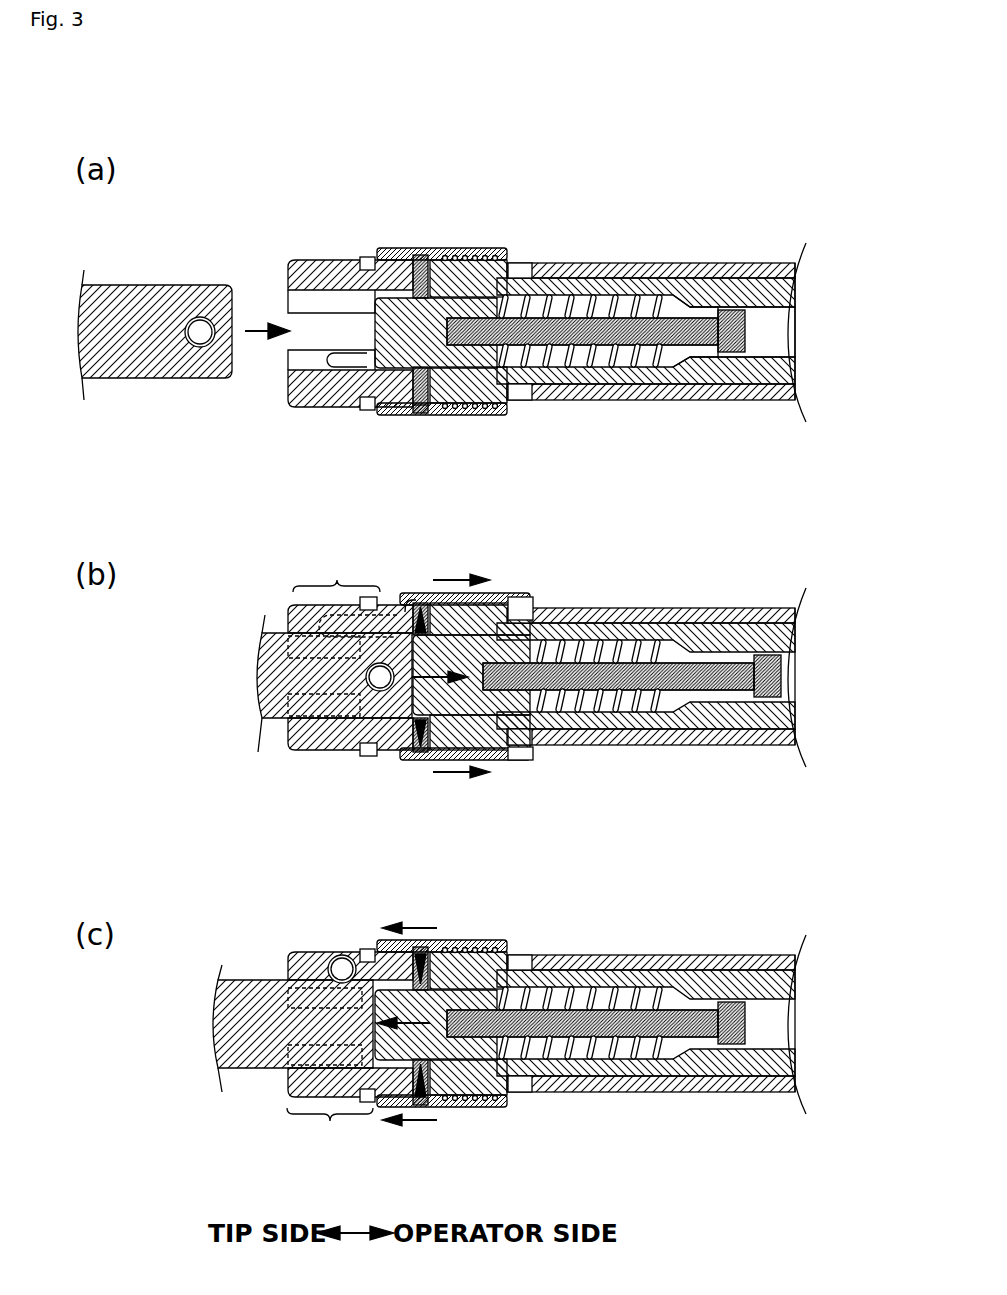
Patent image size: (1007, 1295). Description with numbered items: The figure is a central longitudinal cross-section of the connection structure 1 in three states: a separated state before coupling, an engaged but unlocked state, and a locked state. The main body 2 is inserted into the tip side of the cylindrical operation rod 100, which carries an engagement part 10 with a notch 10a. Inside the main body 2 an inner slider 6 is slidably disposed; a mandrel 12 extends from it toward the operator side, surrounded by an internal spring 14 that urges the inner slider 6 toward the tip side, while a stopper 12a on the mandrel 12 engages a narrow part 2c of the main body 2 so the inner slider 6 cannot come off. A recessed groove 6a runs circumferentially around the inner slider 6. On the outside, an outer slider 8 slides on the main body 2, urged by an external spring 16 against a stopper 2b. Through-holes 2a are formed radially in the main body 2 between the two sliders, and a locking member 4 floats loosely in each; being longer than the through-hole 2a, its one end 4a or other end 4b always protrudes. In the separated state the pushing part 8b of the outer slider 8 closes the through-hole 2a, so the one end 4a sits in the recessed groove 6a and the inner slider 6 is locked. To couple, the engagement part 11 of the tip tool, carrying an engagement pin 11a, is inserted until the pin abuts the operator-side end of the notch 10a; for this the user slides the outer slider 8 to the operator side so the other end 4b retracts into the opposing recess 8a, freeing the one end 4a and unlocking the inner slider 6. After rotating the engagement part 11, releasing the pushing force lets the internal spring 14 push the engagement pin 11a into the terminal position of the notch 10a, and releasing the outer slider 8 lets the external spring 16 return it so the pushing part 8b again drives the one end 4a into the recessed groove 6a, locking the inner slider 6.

The connection structure 1 is at (257, 198).
The main body 2 is at (308, 258).
The through-hole 2a is at (424, 410).
The stopper 2b is at (362, 405).
The narrow part 2c is at (690, 315).
The locking member 4 is at (402, 250).
The one end 4a is at (364, 257).
The other end 4b is at (415, 620).
The inner slider 6 is at (500, 280).
The recessed groove 6a is at (436, 262).
The outer slider 8 is at (388, 412).
The opposing recess 8a is at (405, 752).
The pushing part 8b is at (460, 416).
The engagement part 10 is at (333, 851).
The notch 10a is at (288, 705).
The engagement part 11 is at (185, 378).
The engagement pin 11a is at (362, 676).
The mandrel 12 is at (628, 310).
The stopper 12a is at (740, 330).
The internal spring 14 is at (650, 990).
The external spring 16 is at (500, 414).
The operation rod 100 is at (677, 606).